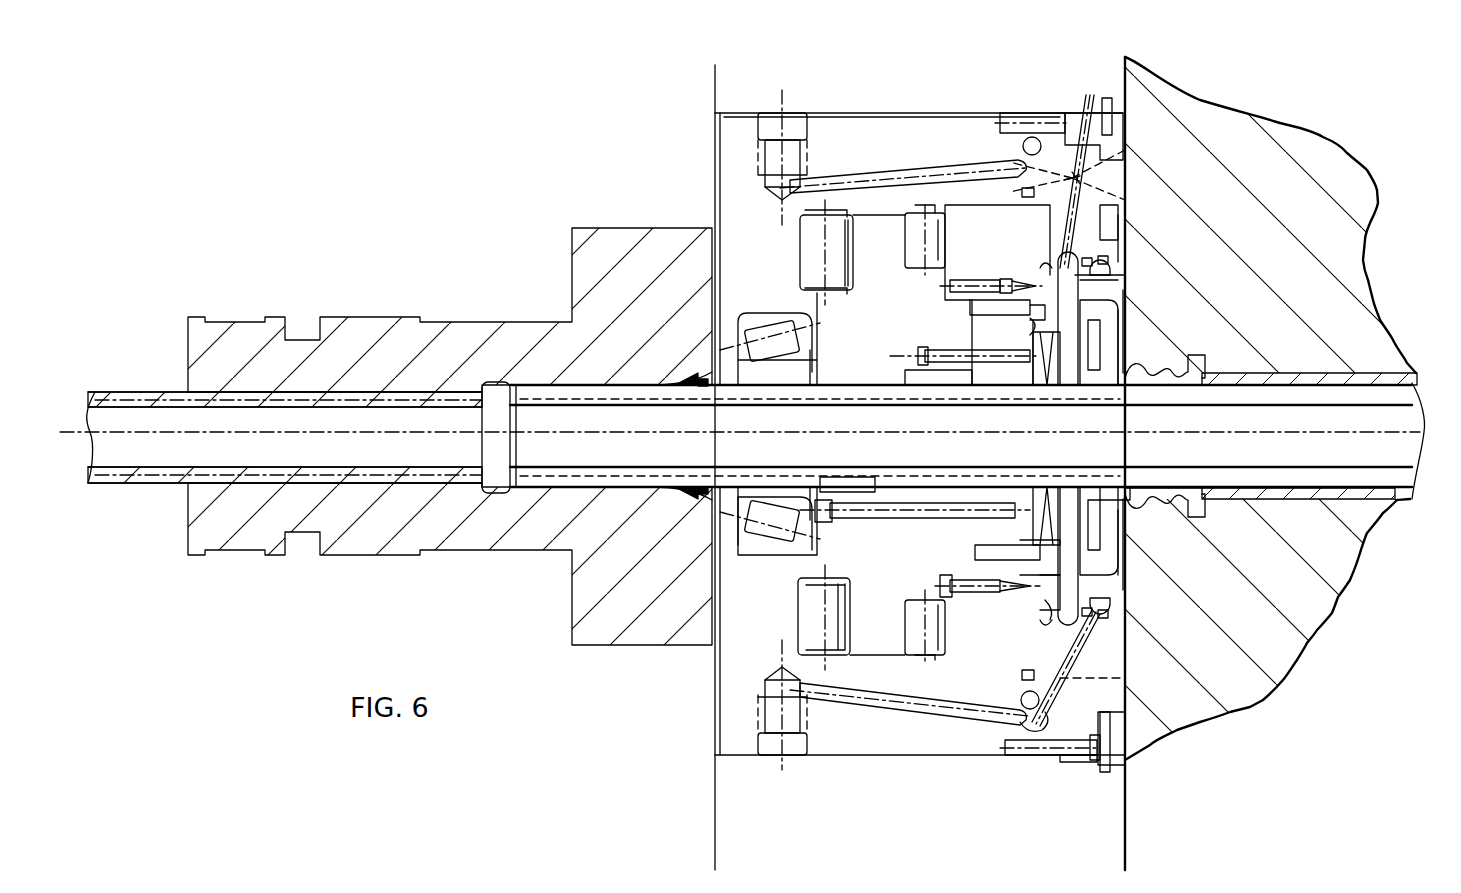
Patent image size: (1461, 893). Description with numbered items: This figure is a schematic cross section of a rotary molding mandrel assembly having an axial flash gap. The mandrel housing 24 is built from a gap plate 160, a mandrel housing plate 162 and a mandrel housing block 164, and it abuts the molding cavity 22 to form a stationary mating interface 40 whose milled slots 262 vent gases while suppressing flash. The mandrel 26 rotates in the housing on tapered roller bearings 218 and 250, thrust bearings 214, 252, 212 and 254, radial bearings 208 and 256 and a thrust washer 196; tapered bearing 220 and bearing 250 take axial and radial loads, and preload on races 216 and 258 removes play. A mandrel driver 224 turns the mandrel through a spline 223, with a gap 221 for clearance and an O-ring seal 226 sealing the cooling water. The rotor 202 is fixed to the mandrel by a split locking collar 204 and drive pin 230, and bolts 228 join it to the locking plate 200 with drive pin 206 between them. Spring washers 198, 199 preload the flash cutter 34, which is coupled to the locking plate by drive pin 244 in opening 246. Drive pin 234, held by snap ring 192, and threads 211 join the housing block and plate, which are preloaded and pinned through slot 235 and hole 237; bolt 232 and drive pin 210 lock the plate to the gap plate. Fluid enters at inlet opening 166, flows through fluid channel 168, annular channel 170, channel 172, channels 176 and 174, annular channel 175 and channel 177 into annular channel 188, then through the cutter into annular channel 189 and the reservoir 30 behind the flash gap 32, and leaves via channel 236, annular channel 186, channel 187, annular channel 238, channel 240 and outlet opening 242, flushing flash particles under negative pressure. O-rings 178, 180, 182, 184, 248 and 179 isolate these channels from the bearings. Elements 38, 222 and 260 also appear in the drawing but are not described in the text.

The molding cavity 22 is at (1282, 660).
The mandrel housing 24 is at (942, 100).
The mandrel 26 is at (1210, 400).
The reservoir 30 is at (1118, 487).
The flash gap 32 is at (1155, 489).
The flash cutter 34 is at (1085, 395).
The shaft 38 is at (1290, 405).
The stationary mating interface 40 is at (1128, 345).
The gap plate 160 is at (1126, 318).
The mandrel housing plate 162 is at (1085, 180).
The mandrel housing block 164 is at (834, 120).
The fluid inlet opening 166 is at (783, 118).
The fluid channel 168 is at (915, 178).
The annular fluid channel 170 is at (1022, 147).
The fluid channel 172 is at (1126, 173).
The fluid channel 174 is at (1126, 200).
The annular fluid channel 175 is at (1062, 255).
The fluid channel 176 is at (1126, 147).
The fluid channel 177 is at (1126, 273).
The O-ring 178 is at (1022, 192).
The O-ring 179 is at (1112, 717).
The O-ring 180 is at (1040, 270).
The O-ring 182 is at (1085, 258).
The O-ring 184 is at (1120, 221).
The annular fluid channel 186 is at (1112, 265).
The fluid channel 187 is at (1126, 680).
The annular fluid channel 188 is at (1068, 285).
The annular fluid channel 189 is at (1135, 372).
The snap ring 192 is at (1107, 98).
The thrust washer 196 is at (1074, 322).
The spring washer 198 is at (1046, 388).
The spring washer 199 is at (1047, 490).
The locking plate 200 is at (1010, 390).
The rotor 202 is at (890, 387).
The split locking collar 204 is at (935, 390).
The drive pin 206 is at (940, 350).
The radial bearing 208 is at (975, 308).
The drive pin 210 is at (950, 280).
The threads 211 is at (958, 210).
The thrust bearing 212 is at (905, 243).
The thrust bearing 214 is at (800, 247).
The race 216 is at (806, 369).
The tapered roller bearing 218 is at (760, 318).
The tapered bearing 220 is at (785, 341).
The gap 221 is at (712, 646).
The seal 222 is at (712, 370).
The spline 223 is at (605, 482).
The mandrel driver 224 is at (414, 546).
The O-ring seal 226 is at (708, 487).
The bolts 228 is at (880, 512).
The drive pin 230 is at (845, 477).
The bolt 232 is at (962, 597).
The drive pin 234 is at (1025, 750).
The slot 235 is at (1020, 112).
The fluid channel 236 is at (1082, 545).
The hole 237 is at (1080, 762).
The annular fluid channel 238 is at (1030, 730).
The fluid channel 240 is at (890, 698).
The fluid outlet opening 242 is at (803, 712).
The drive pin 244 is at (1030, 555).
The opening 246 is at (1120, 520).
The O-ring 248 is at (1036, 318).
The tapered roller bearing 250 is at (790, 535).
The thrust bearing 252 is at (805, 622).
The thrust bearing 254 is at (910, 630).
The radial bearing 256 is at (985, 552).
The race 258 is at (762, 500).
The hanger 260 is at (758, 548).
The milled slots 262 is at (1122, 240).